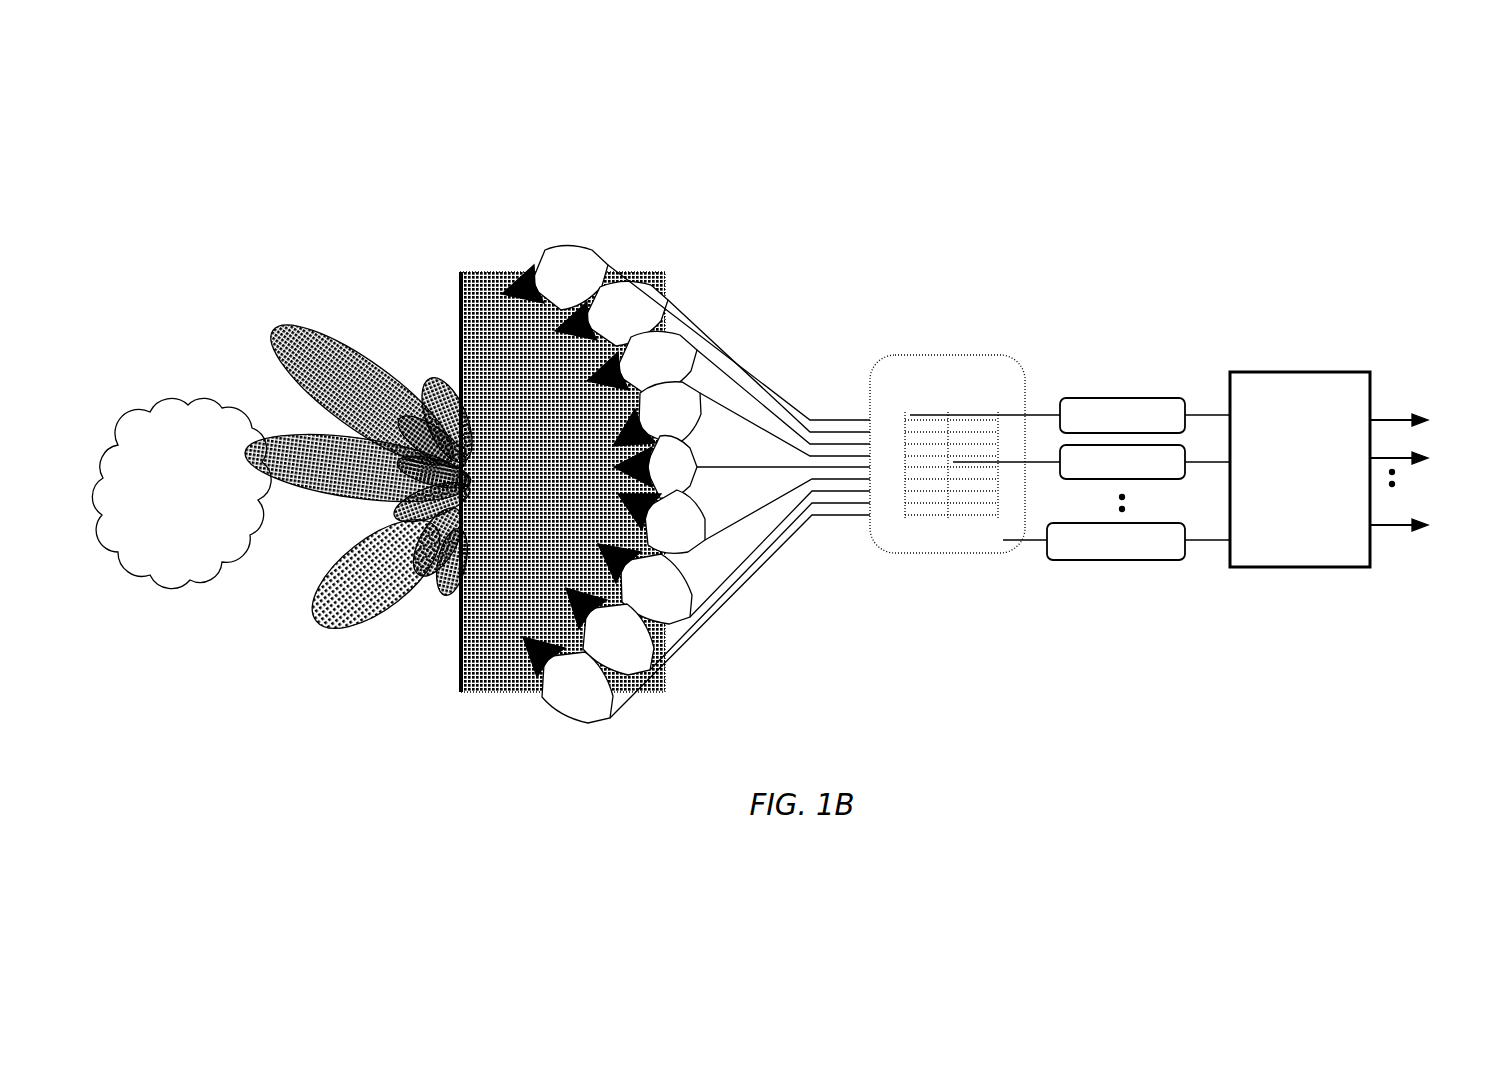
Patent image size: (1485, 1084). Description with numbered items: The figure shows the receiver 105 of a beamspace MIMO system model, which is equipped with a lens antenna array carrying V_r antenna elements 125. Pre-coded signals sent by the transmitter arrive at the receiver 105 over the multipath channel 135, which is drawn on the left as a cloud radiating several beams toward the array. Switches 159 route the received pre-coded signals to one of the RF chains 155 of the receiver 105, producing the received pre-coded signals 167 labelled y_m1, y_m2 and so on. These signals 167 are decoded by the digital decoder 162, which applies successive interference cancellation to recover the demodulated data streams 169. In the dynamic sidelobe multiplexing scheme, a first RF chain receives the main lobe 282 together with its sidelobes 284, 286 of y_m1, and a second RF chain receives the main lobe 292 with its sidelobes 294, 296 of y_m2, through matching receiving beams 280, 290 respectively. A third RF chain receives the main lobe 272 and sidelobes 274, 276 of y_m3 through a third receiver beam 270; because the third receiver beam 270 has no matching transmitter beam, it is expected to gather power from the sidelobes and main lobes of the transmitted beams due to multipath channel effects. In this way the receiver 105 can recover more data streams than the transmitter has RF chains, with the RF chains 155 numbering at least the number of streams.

The receiver 105 is at (348, 124).
The antenna elements 125 is at (560, 184).
The multipath channel 135 is at (181, 493).
The switches 159 is at (947, 454).
The RF chains 155 is at (1118, 390).
The received pre-coded signals 167 is at (1212, 378).
The digital decoder 162 is at (1300, 469).
The data streams 169 is at (1402, 378).
The third receiver beam 270 is at (622, 363).
The receiving beam 280 is at (640, 584).
The receiving beam 290 is at (548, 668).
The main lobe 272 is at (376, 574).
The sidelobe 274 is at (394, 516).
The sidelobe 276 is at (446, 576).
The main lobe 282 is at (357, 468).
The beam 284 is at (404, 424).
The beam 286 is at (412, 546).
The main lobe 292 is at (362, 395).
The beam 294 is at (428, 378).
The beam 296 is at (385, 456).